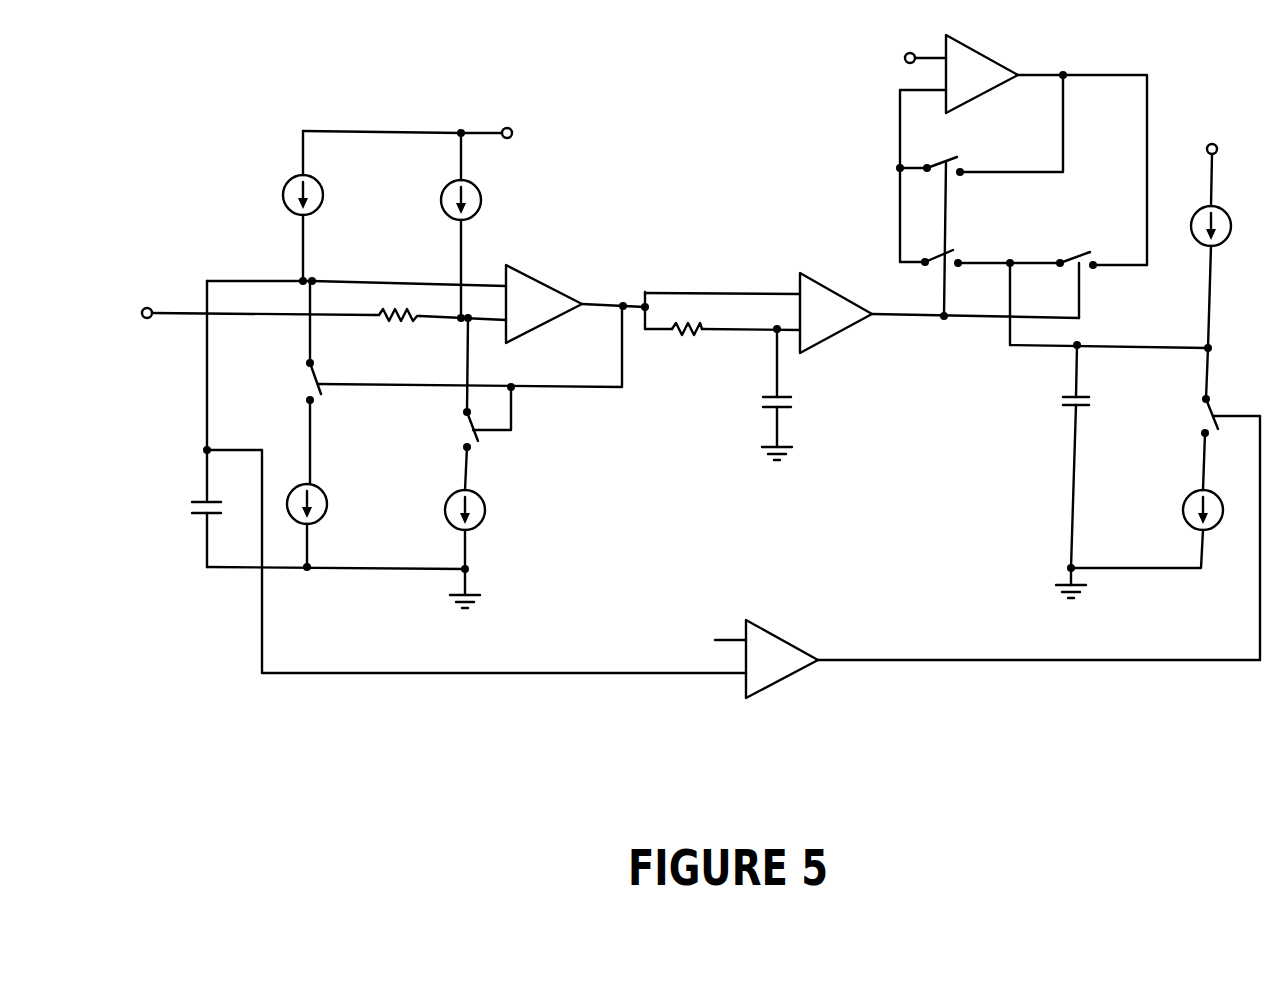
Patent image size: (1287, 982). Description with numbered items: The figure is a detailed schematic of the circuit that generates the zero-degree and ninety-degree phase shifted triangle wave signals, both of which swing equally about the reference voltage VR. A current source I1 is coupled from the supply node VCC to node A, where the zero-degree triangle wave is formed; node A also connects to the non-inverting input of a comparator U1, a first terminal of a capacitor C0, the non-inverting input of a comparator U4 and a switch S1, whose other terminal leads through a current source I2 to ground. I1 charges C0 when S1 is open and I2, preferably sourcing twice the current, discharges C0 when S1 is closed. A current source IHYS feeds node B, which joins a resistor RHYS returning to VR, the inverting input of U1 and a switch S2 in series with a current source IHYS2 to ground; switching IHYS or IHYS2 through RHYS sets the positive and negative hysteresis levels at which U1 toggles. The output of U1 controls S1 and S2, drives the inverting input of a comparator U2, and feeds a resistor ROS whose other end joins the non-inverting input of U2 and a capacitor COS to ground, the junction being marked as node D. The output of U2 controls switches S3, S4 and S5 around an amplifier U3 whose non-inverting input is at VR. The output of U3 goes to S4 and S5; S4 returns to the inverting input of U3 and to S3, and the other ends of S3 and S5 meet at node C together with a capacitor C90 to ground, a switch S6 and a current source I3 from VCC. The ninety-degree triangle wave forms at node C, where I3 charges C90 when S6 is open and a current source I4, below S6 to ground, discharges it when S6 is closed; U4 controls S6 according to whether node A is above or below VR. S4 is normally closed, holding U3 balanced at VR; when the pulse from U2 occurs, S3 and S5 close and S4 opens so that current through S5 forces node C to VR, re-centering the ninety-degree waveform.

The current source I1 is at (322, 206).
The current source I2 is at (325, 525).
The current source I3 is at (1231, 251).
The current source I4 is at (1147, 500).
The current source IHYS is at (491, 225).
The current source IHYS2 is at (502, 529).
The comparator U1 is at (577, 300).
The comparator U2 is at (939, 306).
The amplifier U3 is at (1046, 144).
The comparator U4 is at (1003, 652).
The switch S1 is at (282, 382).
The switch S2 is at (437, 404).
The switch S3 is at (965, 247).
The switch S4 is at (952, 155).
The switch S5 is at (1099, 249).
The switch S6 is at (1210, 504).
The capacitor C0 is at (182, 511).
The capacitor C90 is at (1044, 471).
The capacitor COS is at (803, 394).
The resistor ROS is at (680, 354).
The resistor RHYS is at (390, 339).
The node A is at (278, 258).
The node B is at (445, 345).
The node C is at (1143, 322).
The node D is at (752, 360).
The reference voltage VR is at (519, 348).
The voltage supply node VCC is at (876, 132).